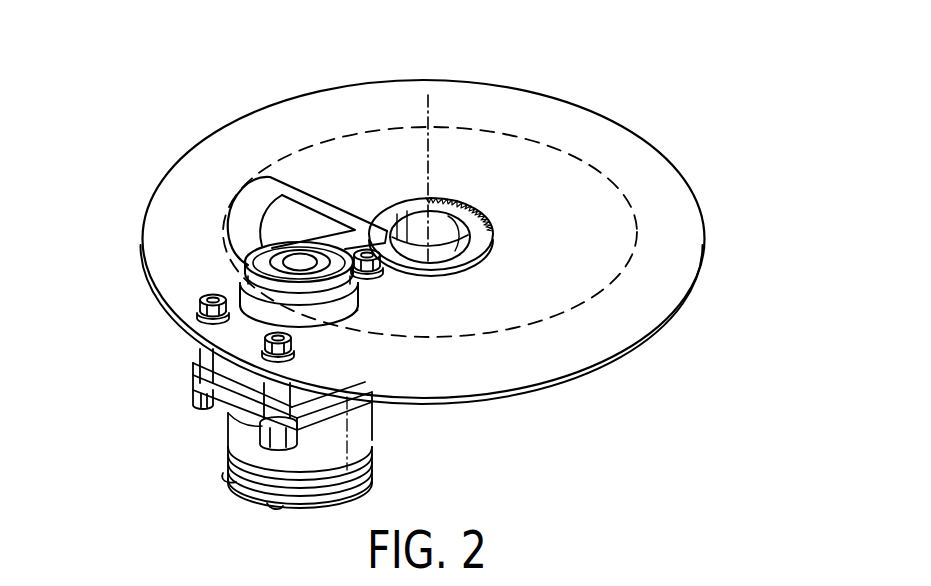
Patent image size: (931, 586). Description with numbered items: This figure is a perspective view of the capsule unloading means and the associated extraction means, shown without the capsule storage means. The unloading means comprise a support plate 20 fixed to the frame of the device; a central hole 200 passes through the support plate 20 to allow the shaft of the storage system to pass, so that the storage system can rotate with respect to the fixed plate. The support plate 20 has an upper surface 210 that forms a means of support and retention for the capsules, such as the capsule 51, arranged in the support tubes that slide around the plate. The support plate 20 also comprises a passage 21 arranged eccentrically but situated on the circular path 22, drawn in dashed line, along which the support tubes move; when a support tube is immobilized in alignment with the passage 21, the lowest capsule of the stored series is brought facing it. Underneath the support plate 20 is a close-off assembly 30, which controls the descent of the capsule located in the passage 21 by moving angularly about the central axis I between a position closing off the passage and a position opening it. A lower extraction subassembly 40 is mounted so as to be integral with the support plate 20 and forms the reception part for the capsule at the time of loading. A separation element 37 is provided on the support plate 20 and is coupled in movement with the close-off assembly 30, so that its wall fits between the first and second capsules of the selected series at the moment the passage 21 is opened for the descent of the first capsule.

The support plate 20 is at (727, 243).
The upper surface 210 is at (677, 195).
The circular path 22 is at (653, 327).
The central hole 200 is at (466, 212).
The central axis I is at (430, 113).
The separation element 37 is at (240, 182).
The capsule 51 is at (238, 295).
The passage 21 is at (374, 322).
The close-off assembly 30 is at (146, 316).
The lower extraction subassembly 40 is at (211, 470).